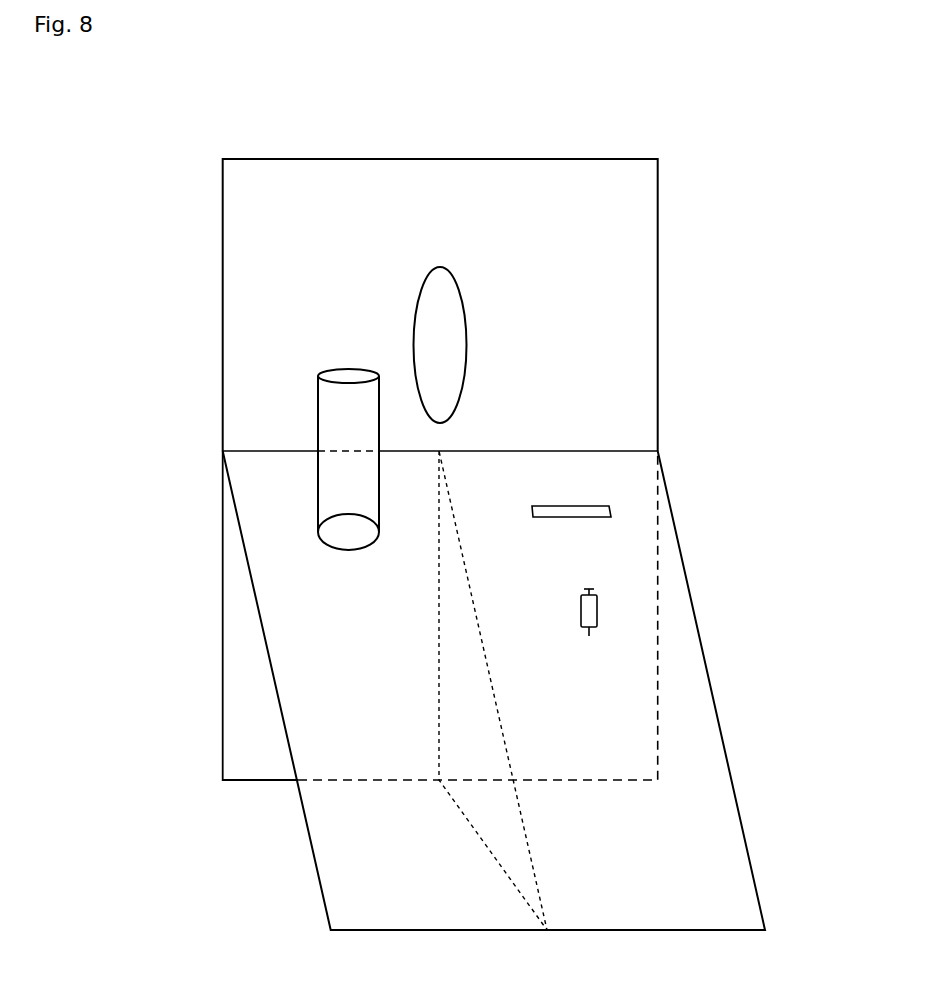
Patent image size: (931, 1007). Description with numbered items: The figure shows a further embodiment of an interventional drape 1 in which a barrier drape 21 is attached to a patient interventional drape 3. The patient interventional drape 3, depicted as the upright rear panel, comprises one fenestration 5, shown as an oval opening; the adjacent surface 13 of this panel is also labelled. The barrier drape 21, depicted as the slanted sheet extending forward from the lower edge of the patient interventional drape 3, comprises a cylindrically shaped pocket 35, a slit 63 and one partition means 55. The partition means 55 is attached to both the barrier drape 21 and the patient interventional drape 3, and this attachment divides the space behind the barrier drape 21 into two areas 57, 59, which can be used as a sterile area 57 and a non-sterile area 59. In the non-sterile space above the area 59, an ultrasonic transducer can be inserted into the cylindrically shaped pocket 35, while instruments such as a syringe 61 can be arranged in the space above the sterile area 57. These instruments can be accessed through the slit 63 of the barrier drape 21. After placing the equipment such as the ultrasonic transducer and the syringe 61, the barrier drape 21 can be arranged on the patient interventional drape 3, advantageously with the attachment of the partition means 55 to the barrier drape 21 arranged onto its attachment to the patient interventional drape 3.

The interventional drape 1 is at (715, 279).
The patient interventional drape 3 is at (659, 352).
The fenestration 5 is at (440, 298).
The panel surface 13 is at (596, 402).
The barrier drape 21 is at (668, 852).
The cylindrically shaped pocket 35 is at (343, 486).
The partition means 55 is at (475, 725).
The sterile area 57 is at (617, 742).
The non-sterile area 59 is at (252, 722).
The syringe 61 is at (600, 611).
The slit 63 is at (598, 512).